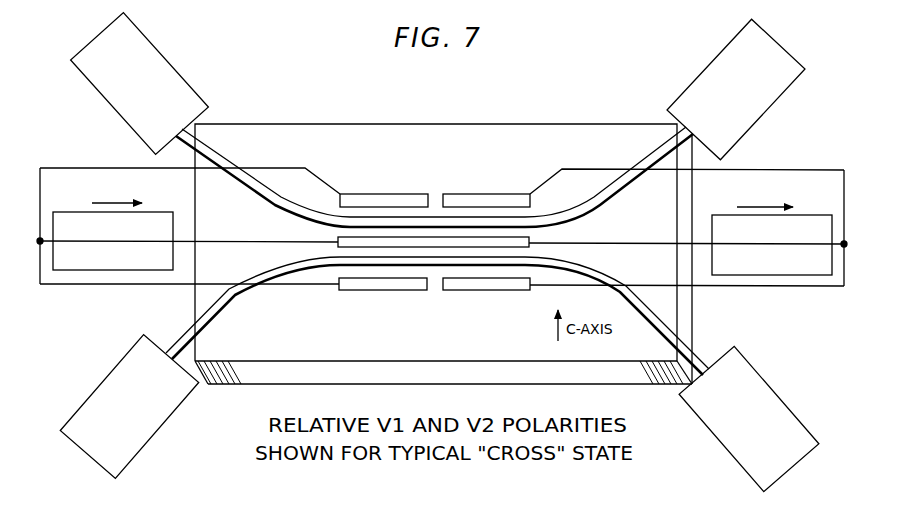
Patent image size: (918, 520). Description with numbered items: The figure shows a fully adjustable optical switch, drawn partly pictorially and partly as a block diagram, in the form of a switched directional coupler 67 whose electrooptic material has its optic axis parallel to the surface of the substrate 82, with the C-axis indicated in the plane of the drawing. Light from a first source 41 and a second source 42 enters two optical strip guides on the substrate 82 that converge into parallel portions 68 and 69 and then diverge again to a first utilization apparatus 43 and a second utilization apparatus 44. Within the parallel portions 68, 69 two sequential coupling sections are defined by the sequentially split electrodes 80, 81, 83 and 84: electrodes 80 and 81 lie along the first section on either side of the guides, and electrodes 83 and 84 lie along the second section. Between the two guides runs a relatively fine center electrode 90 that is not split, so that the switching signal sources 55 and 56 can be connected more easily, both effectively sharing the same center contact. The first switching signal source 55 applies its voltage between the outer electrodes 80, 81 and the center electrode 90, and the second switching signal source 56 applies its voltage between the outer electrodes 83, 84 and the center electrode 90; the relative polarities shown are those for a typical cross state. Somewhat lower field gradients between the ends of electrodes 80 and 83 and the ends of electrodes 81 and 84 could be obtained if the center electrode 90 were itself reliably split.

The source 41 is at (110, 103).
The source 42 is at (97, 386).
The utilization apparatus 43 is at (767, 111).
The utilization apparatus 44 is at (779, 398).
The switching signal source 55 is at (93, 272).
The switching signal source 56 is at (787, 277).
The switched directional coupler 67 is at (452, 158).
The parallel portion of optical strip guide 68 is at (400, 221).
The parallel portion of optical strip guide 69 is at (406, 266).
The split electrode 80 is at (360, 195).
The split electrode 81 is at (354, 291).
The substrate surface 82 is at (290, 124).
The split electrode 83 is at (505, 196).
The split electrode 84 is at (510, 291).
The center electrode 90 is at (535, 240).